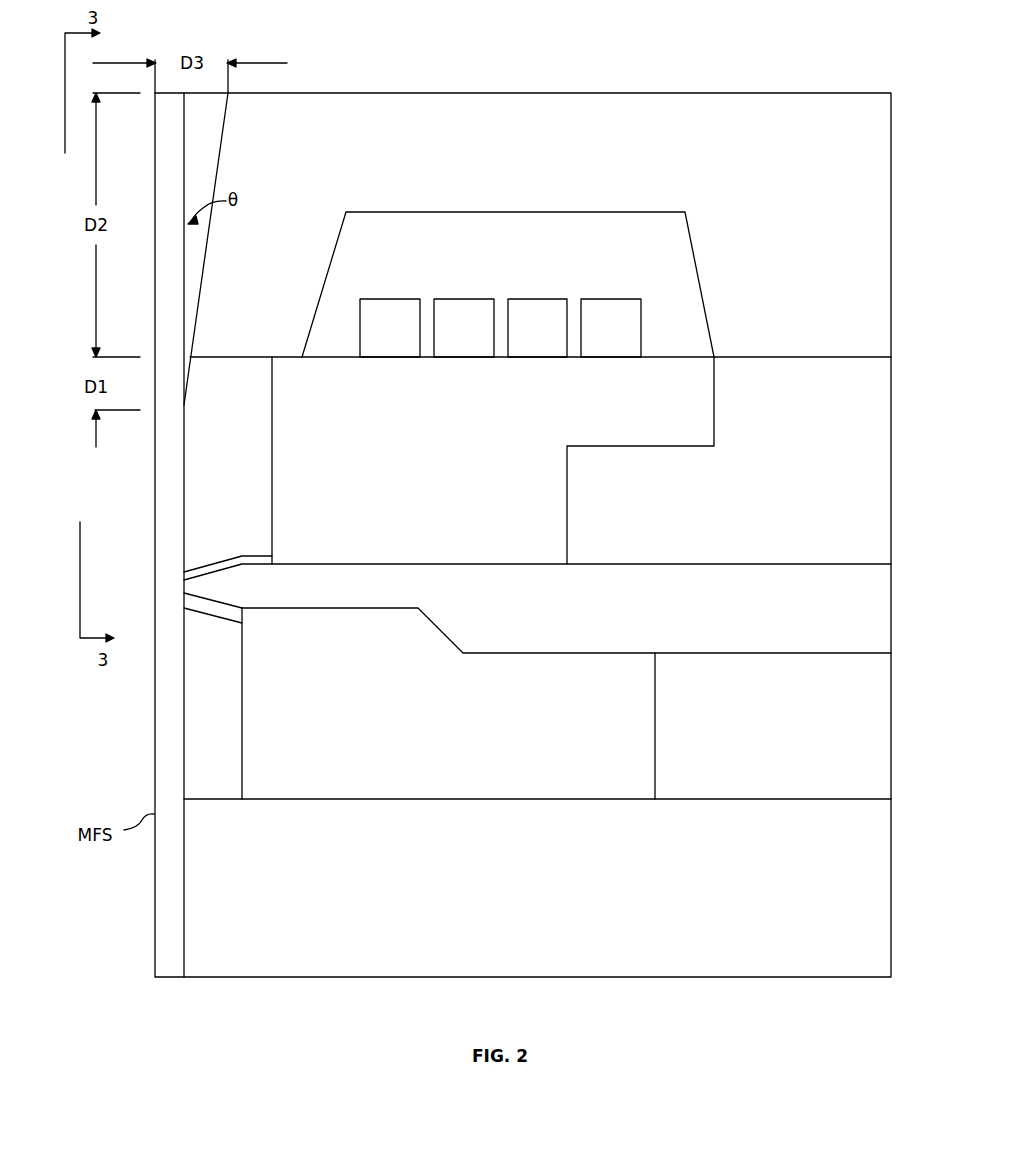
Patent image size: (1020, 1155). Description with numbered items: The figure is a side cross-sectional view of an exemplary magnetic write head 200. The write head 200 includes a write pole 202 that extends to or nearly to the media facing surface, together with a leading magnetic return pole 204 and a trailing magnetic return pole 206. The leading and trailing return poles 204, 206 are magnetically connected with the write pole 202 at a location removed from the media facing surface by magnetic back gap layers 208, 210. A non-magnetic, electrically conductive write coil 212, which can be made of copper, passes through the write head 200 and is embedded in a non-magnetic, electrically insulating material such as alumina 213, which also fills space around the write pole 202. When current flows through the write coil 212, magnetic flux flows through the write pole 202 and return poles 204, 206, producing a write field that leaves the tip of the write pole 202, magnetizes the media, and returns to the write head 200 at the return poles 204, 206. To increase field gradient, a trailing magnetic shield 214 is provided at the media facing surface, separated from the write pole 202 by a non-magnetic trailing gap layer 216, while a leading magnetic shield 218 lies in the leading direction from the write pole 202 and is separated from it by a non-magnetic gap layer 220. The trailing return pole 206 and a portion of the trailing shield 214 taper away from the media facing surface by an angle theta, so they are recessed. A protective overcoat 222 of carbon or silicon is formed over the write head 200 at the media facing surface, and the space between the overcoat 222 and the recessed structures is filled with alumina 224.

The magnetic write head 200 is at (640, 90).
The write pole 202 is at (630, 599).
The leading magnetic return pole 204 is at (545, 872).
The trailing magnetic return pole 206 is at (525, 153).
The magnetic back gap layer 208 is at (712, 721).
The magnetic back gap layer 210 is at (725, 484).
The write coil 212 is at (500, 328).
The alumina 213 is at (548, 243).
The trailing magnetic shield 214 is at (245, 422).
The non-magnetic trailing gap layer 216 is at (252, 559).
The leading magnetic shield 218 is at (210, 697).
The non-magnetic gap layer 220 is at (218, 612).
The protective overcoat 222 is at (161, 701).
The alumina fill layer 224 is at (197, 137).